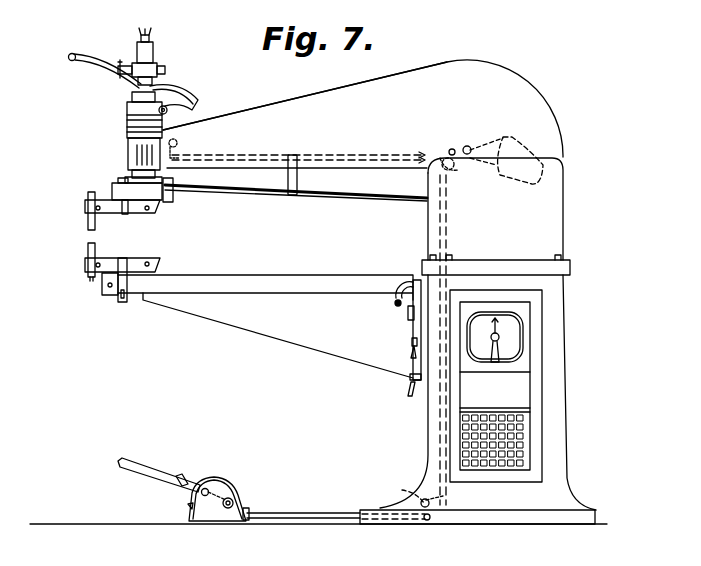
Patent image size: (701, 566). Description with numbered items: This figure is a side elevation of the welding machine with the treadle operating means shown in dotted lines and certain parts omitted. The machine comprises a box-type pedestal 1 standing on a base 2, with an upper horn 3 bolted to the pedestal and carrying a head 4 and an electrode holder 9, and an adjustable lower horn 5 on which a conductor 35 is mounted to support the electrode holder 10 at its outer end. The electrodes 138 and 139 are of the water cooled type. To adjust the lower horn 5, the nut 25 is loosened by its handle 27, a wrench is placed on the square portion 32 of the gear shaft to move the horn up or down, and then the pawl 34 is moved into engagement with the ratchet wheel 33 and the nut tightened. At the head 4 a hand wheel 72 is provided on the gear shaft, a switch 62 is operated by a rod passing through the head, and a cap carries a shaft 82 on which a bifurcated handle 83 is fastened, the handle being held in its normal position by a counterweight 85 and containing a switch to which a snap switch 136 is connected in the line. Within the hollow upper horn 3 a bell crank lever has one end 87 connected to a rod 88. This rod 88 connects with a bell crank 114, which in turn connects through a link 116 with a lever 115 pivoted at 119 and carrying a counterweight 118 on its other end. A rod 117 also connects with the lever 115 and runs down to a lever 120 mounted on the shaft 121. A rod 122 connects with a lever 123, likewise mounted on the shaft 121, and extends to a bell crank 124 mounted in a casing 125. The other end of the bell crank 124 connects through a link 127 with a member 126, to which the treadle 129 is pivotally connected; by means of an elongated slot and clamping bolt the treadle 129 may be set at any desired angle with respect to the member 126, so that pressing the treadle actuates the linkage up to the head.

The pedestal 1 is at (568, 387).
The base 2 is at (597, 518).
The upper horn 3 is at (305, 96).
The head 4 is at (124, 150).
The lower horn 5 is at (270, 328).
The electrode holder 9 is at (150, 213).
The electrode holder 10 is at (148, 264).
The nut 25 is at (410, 378).
The handle 27 is at (410, 394).
The square portion 32 is at (412, 341).
The ratchet wheel 33 is at (410, 316).
The pawl 34 is at (394, 307).
The conductor 35 is at (259, 275).
The switch 62 is at (159, 45).
The hand wheel 72 is at (120, 60).
The shaft 82 is at (170, 105).
The bifurcated handle 83 is at (95, 73).
The counterweight 85 is at (200, 105).
The bell crank end 87 is at (180, 147).
The rod 88 is at (258, 160).
The bell crank 114 is at (427, 170).
The lever 115 is at (456, 149).
The link 116 is at (456, 170).
The rod 117 is at (447, 222).
The counterweight 118 is at (530, 184).
The pivot 119 is at (471, 148).
The lever 120 is at (432, 512).
The shaft 121 is at (400, 489).
The rod 122 is at (300, 512).
The lever 123 is at (427, 508).
The bell crank 124 is at (253, 498).
The casing 125 is at (233, 485).
The member 126 is at (208, 489).
The link 127 is at (204, 519).
The treadle 129 is at (152, 482).
The snap switch 136 is at (165, 70).
The electrode 138 is at (88, 222).
The electrode 139 is at (88, 250).